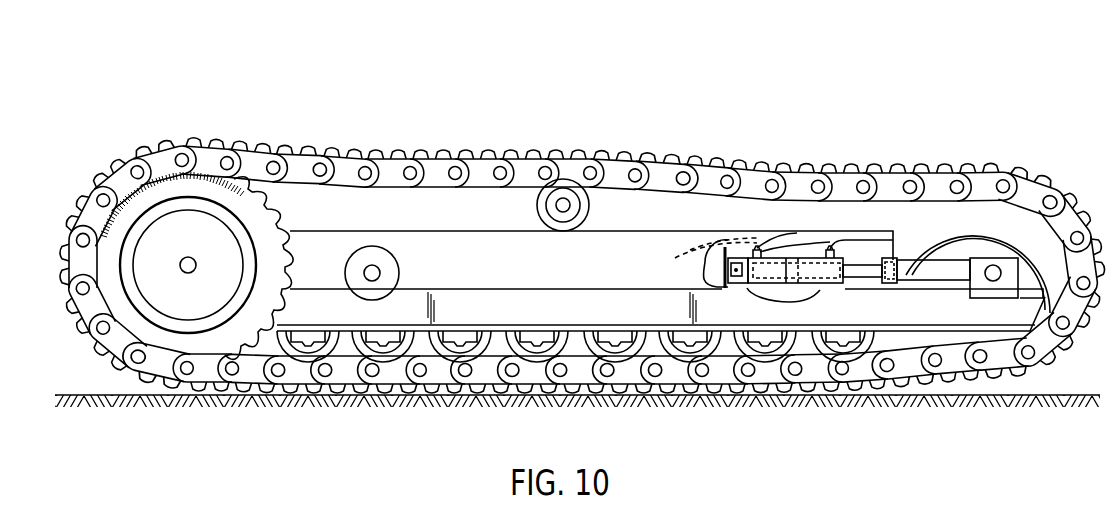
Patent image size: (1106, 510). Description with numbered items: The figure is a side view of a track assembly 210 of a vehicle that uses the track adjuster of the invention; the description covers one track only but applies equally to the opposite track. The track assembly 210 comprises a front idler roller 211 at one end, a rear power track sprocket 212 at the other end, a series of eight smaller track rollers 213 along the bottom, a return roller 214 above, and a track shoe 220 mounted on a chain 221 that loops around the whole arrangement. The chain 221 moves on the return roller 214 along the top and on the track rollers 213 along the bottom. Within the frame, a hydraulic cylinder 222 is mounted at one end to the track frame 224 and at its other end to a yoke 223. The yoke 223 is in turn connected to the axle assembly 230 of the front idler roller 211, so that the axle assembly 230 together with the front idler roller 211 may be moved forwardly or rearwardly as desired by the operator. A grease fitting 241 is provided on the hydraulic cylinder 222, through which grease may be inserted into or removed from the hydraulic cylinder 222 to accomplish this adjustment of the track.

The track assembly 210 is at (368, 70).
The front idler roller 211 is at (943, 200).
The rear power track sprocket 212 is at (272, 188).
The track rollers 213 is at (352, 360).
The return roller 214 is at (587, 170).
The track shoe 220 is at (787, 168).
The chain 221 is at (396, 190).
The hydraulic cylinder 222 is at (797, 233).
The yoke 223 is at (925, 233).
The track frame 224 is at (740, 250).
The axle assembly 230 is at (1003, 258).
The grease fitting 241 is at (830, 252).